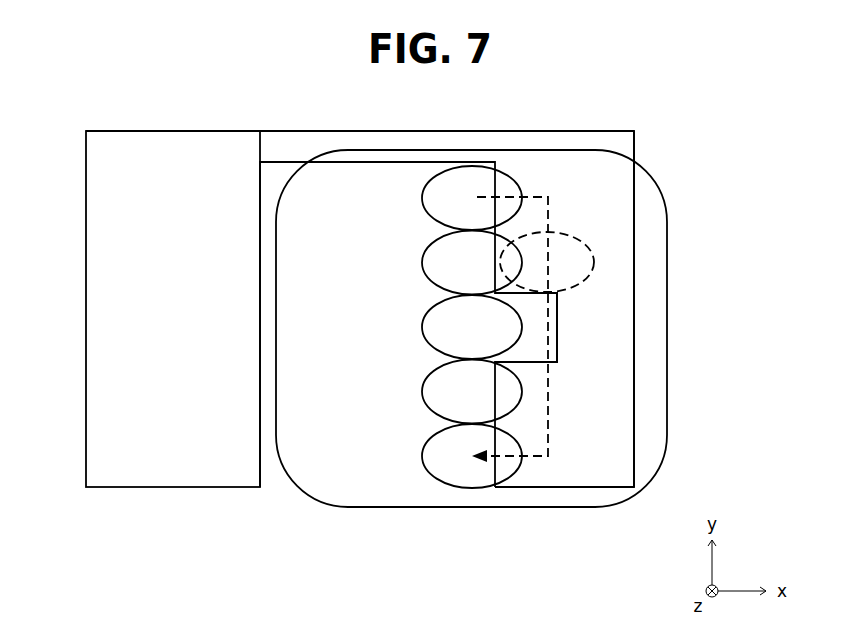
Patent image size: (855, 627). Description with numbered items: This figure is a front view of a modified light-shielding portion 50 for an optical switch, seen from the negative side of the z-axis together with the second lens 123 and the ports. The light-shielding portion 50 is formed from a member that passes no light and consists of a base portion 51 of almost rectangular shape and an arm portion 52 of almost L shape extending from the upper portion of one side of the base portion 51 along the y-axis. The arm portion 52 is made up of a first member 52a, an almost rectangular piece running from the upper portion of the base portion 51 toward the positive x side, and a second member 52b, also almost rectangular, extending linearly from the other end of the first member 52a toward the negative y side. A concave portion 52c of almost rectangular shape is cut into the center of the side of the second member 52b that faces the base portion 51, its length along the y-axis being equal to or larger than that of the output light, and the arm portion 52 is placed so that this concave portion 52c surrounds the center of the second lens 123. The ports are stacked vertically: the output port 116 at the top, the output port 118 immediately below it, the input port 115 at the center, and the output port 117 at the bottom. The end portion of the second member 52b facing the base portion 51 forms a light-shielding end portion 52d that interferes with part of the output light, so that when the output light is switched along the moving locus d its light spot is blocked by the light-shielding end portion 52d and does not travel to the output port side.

The light-shielding portion 50 is at (86, 279).
The base portion 51 is at (190, 131).
The arm portion 52 is at (386, 131).
The first member 52a is at (469, 131).
The second member 52b is at (631, 222).
The concave portion 52c is at (558, 331).
The light-shielding end portion 52d is at (470, 231).
The input port 115 is at (422, 325).
The output port 116 is at (422, 197).
The output port 117 is at (422, 454).
The output port 118 is at (422, 261).
The second lens 123 is at (668, 277).
The moving locus d is at (550, 210).